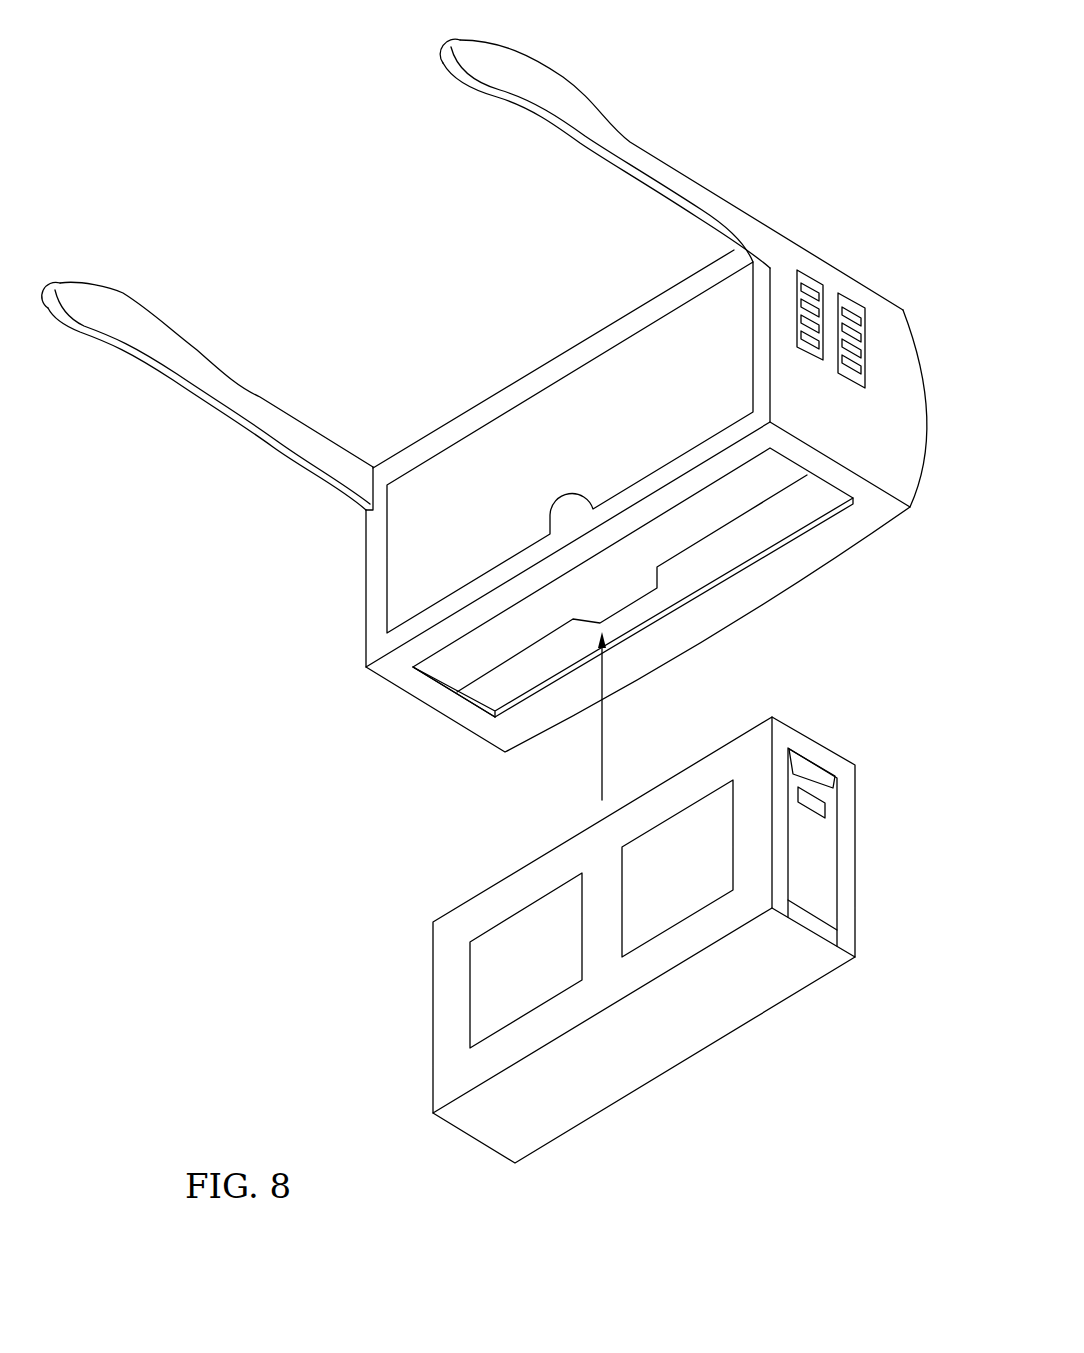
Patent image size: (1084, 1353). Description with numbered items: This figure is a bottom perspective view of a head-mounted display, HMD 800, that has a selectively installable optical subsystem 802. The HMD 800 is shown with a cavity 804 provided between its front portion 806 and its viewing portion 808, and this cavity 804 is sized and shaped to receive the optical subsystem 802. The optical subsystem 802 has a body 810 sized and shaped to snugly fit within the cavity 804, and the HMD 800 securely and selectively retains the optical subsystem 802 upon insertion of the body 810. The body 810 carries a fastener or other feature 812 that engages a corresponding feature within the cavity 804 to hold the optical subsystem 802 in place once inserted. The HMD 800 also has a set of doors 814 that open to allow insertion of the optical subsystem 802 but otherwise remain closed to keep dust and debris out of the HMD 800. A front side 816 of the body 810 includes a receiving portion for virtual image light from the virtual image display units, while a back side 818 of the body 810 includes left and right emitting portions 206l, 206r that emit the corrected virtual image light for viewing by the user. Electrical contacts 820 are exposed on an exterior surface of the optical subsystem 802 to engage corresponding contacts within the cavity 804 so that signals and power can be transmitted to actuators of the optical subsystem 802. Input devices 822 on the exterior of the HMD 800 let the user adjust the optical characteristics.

The HMD 800 is at (503, 395).
The optical subsystem 802 is at (653, 954).
The cavity 804 is at (447, 666).
The front portion 806 is at (927, 473).
The viewing portion 808 is at (529, 423).
The body 810 is at (487, 1127).
The fastener or other feature 812 is at (811, 773).
The doors 814 is at (756, 532).
The front side 816 is at (857, 862).
The back side 818 is at (460, 1062).
The electrical contacts 820 is at (815, 806).
The input devices 822 is at (870, 320).
The left emitting portion 206l is at (537, 930).
The right emitting portion 206r is at (687, 835).